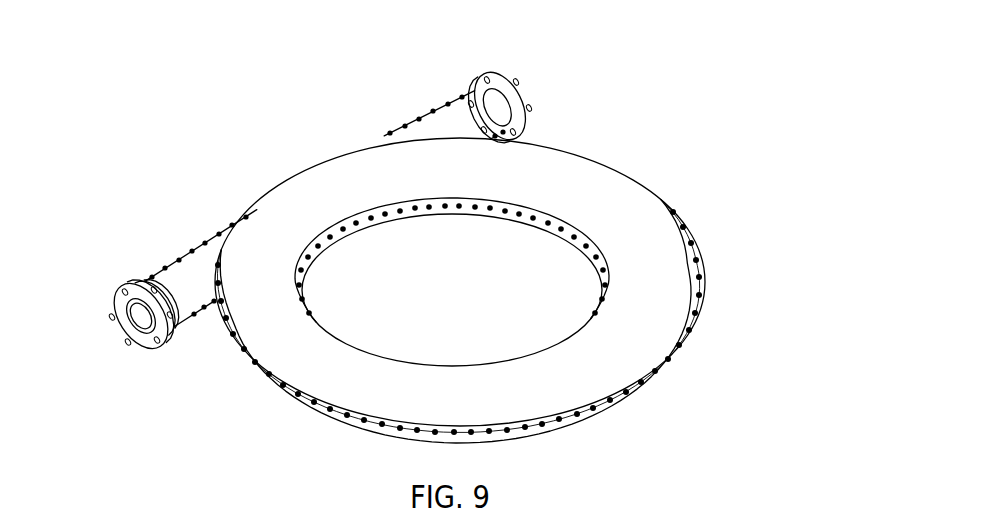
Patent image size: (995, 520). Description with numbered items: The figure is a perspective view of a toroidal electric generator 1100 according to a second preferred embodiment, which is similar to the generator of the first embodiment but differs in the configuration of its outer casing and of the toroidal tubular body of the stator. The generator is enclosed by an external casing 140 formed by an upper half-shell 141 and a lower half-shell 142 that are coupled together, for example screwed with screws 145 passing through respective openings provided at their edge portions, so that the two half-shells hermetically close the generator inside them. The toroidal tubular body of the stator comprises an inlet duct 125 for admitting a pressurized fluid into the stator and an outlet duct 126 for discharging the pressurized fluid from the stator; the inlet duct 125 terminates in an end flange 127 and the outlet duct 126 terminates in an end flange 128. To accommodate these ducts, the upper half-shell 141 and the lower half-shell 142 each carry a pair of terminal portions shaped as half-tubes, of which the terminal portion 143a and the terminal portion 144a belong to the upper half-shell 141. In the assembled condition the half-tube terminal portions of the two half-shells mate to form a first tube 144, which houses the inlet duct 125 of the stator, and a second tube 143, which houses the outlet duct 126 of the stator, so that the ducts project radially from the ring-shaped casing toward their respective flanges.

The toroidal electric generator 1100 is at (574, 67).
The external casing 140 is at (657, 194).
The upper half-shell 141 is at (327, 183).
The lower half-shell 142 is at (422, 220).
The screws 145 is at (460, 328).
The second tube 143 is at (396, 124).
The terminal portion in the shape of a half-tube 143a is at (448, 130).
The end flange 127 is at (505, 72).
The inlet duct 125 is at (500, 110).
The first tube 144 is at (158, 263).
The terminal portion in the shape of a half-tube 144a is at (200, 270).
The end flange 128 is at (117, 328).
The outlet duct 126 is at (172, 330).